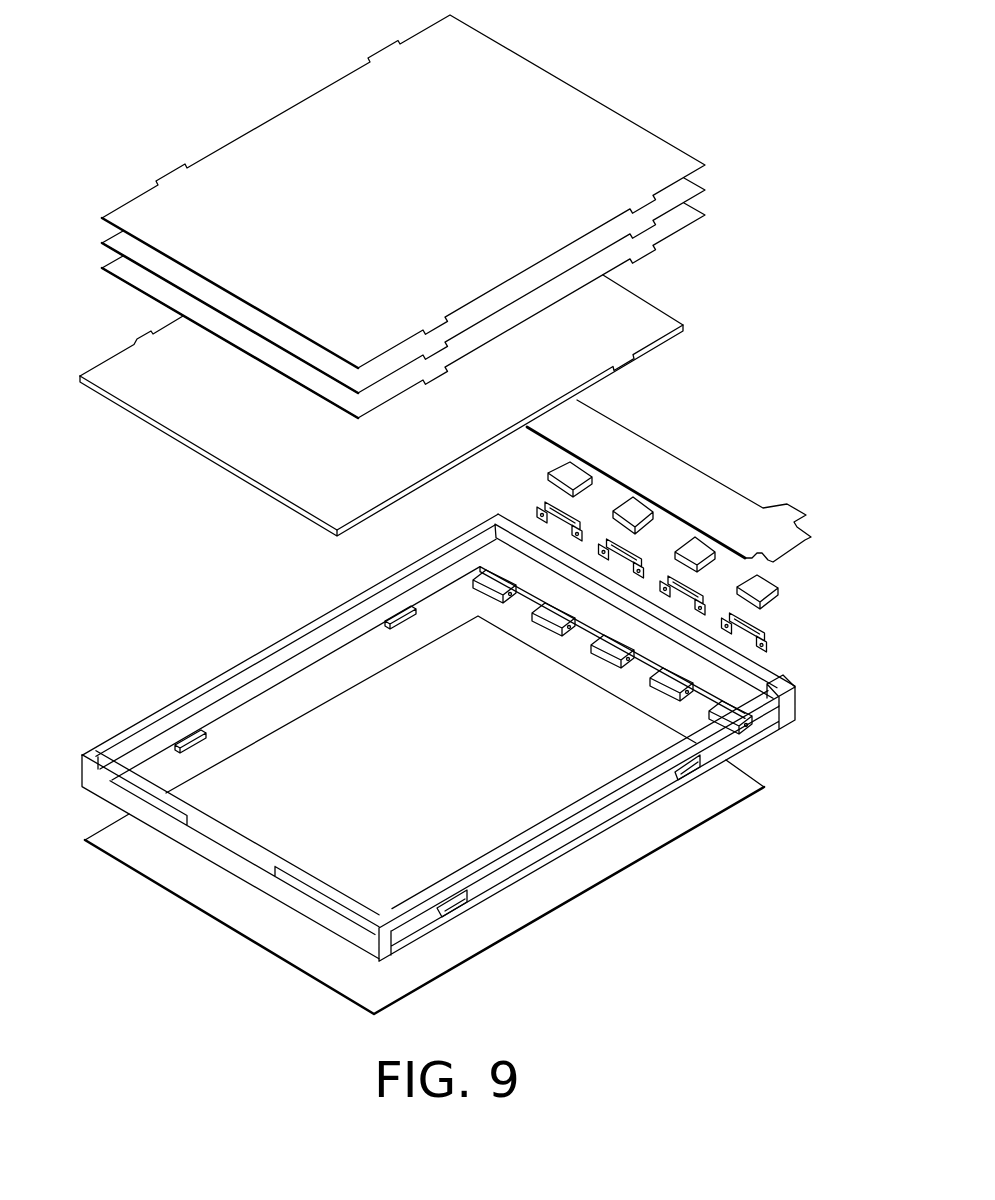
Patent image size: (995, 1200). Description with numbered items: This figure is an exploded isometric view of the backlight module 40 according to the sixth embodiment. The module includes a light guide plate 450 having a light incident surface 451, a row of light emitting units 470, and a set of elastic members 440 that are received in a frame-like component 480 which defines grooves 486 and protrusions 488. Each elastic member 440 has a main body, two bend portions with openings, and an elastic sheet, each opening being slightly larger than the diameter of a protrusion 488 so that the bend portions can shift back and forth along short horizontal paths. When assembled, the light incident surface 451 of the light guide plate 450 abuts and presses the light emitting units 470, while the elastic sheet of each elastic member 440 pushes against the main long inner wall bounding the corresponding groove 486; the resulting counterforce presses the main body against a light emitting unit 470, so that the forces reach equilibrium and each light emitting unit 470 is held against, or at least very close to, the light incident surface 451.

The backlight module 40 is at (284, 46).
The light guide plate 450 is at (653, 292).
The light incident surface 451 is at (683, 319).
The light emitting unit 470 is at (633, 508).
The elastic member 440 is at (540, 506).
The frame 480 is at (258, 639).
The groove 486 is at (476, 598).
The protrusion 488 is at (493, 583).